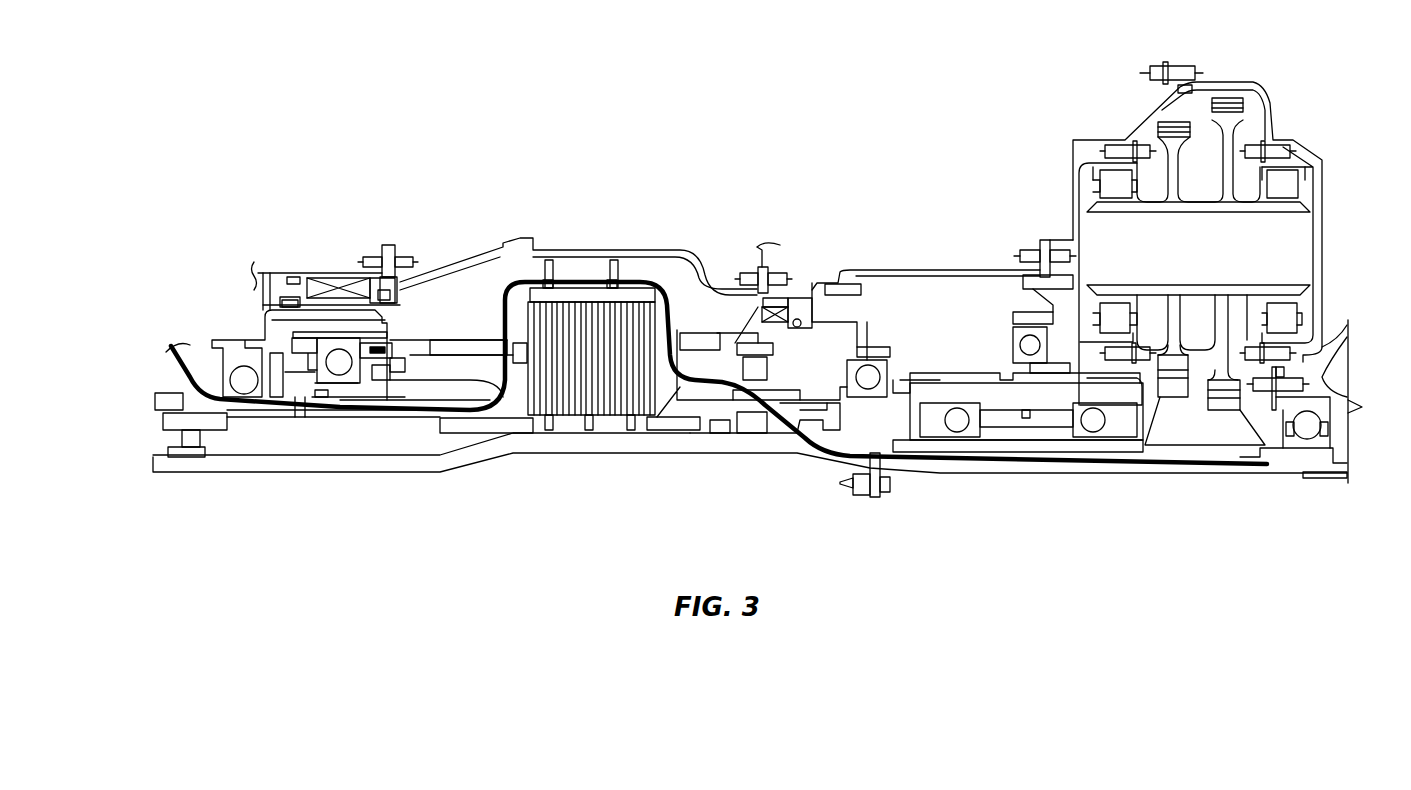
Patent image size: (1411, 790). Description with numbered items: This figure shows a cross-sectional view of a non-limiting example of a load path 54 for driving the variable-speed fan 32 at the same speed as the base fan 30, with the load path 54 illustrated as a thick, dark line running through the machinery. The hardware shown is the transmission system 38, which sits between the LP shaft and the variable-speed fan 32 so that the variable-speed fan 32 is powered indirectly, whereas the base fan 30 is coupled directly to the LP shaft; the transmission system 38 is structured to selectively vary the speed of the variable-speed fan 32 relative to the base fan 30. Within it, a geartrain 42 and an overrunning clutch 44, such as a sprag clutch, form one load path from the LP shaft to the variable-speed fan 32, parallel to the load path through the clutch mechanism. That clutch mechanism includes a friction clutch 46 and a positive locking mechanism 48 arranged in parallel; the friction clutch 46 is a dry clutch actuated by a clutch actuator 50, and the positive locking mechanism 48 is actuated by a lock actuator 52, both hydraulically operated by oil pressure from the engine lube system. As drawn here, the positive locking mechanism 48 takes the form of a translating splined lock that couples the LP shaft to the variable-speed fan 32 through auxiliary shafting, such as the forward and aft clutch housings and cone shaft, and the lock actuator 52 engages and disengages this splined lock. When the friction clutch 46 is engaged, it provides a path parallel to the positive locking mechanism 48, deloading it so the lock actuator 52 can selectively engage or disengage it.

The base fan 30 is at (153, 463).
The variable-speed fan 32 is at (177, 343).
The transmission system 38 is at (287, 128).
The geartrain 42 is at (1245, 112).
The overrunning clutch 44 is at (1035, 440).
The friction clutch 46 is at (570, 415).
The positive locking mechanism 48 is at (803, 450).
The clutch actuator 50 is at (307, 272).
The lock actuator 52 is at (800, 310).
The load path 54 is at (503, 308).